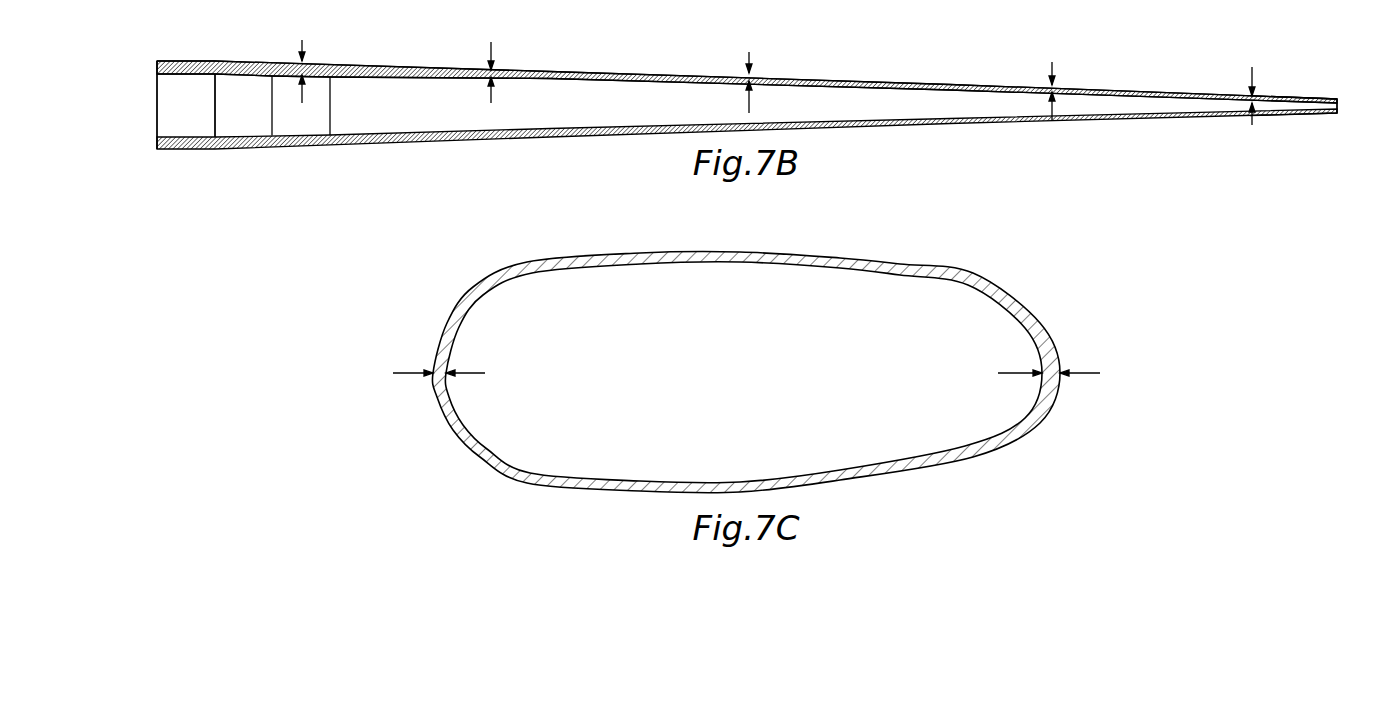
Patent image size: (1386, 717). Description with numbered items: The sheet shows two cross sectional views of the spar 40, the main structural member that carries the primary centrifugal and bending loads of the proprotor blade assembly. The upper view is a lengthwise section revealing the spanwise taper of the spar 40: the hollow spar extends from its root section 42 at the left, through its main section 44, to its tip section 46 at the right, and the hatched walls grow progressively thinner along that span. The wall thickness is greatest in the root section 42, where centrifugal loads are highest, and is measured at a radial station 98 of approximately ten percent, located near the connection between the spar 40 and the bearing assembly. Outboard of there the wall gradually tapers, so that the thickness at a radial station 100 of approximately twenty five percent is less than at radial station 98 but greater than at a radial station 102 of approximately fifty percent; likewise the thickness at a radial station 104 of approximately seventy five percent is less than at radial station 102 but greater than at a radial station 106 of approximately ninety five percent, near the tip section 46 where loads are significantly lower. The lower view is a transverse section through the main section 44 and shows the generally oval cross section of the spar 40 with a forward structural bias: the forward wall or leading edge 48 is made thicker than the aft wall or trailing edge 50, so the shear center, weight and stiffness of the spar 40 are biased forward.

In FIG. 7B, the spar 40 is at (910, 87).
In FIG. 7C, the spar 40 is at (817, 254).
In FIG. 7B, the root section 42 is at (216, 60).
In FIG. 7B, the main section 44 is at (793, 80).
In FIG. 7B, the tip section 46 is at (1312, 98).
In FIG. 7C, the leading edge 48 is at (1088, 373).
In FIG. 7C, the trailing edge 50 is at (407, 373).
In FIG. 7B, the radial station 98 is at (303, 42).
In FIG. 7B, the radial station 100 is at (491, 50).
In FIG. 7B, the radial station 102 is at (749, 58).
In FIG. 7B, the radial station 104 is at (1052, 68).
In FIG. 7B, the radial station 106 is at (1252, 74).